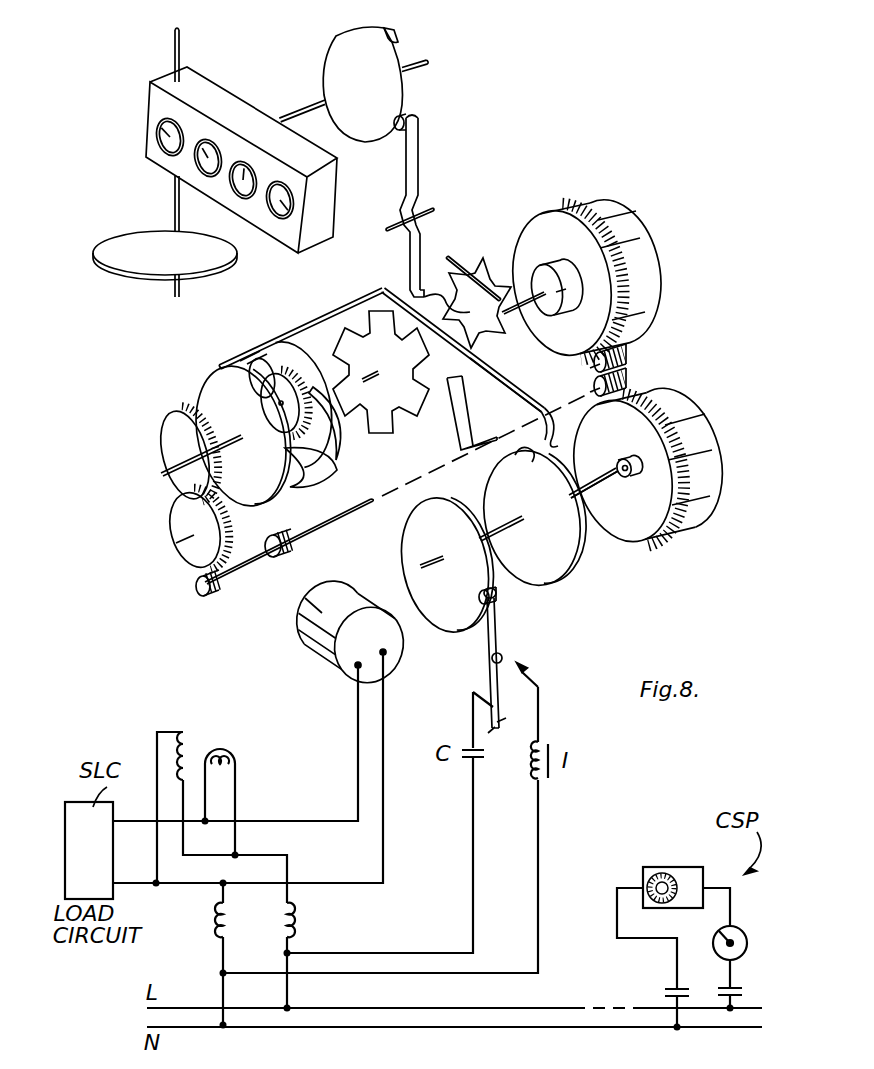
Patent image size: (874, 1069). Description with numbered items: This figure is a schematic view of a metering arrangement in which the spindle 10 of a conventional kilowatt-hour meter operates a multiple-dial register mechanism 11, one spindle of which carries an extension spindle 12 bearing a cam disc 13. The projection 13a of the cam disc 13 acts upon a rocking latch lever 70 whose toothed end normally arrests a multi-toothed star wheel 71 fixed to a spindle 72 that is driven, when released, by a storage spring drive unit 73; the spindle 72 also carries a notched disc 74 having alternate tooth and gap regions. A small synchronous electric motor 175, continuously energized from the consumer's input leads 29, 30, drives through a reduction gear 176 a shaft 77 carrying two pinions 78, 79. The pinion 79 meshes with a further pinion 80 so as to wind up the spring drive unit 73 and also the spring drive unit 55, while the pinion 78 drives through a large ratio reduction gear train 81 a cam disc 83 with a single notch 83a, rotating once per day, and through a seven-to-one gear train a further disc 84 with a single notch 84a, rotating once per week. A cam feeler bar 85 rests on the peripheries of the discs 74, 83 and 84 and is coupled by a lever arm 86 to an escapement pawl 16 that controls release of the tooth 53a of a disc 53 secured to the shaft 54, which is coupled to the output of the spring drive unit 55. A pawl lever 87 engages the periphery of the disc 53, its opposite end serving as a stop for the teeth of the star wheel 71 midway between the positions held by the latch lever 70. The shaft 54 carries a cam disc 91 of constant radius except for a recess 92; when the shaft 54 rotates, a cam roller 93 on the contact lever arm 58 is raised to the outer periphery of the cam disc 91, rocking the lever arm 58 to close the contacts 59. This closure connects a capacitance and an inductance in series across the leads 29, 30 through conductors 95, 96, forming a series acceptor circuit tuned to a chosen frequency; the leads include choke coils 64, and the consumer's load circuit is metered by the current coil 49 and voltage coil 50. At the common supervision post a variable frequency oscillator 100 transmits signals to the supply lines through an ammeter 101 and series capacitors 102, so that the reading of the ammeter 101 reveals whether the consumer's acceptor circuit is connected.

The spindle 10 is at (173, 206).
The register mechanism 11 is at (248, 112).
The extension spindle 12 is at (308, 108).
The cam disc 13 is at (340, 43).
The projection 13a is at (400, 33).
The rocking latch lever 70 is at (418, 160).
The star wheel 71 is at (462, 270).
The spindle 72 is at (473, 282).
The storage spring drive unit 73 is at (644, 240).
The pinion 80 is at (628, 357).
The pinion 79 is at (630, 382).
The storage spring drive unit 55 is at (690, 413).
The shaft 54 is at (614, 481).
The disc 53 is at (563, 558).
The tooth 53a is at (528, 462).
The escapement pawl 16 is at (561, 427).
The lever arm 86 is at (518, 393).
The pawl lever 87 is at (462, 417).
The cam feeler bar 85 is at (322, 318).
The notched disc 74 is at (381, 385).
The notch 84a is at (336, 435).
The notch 83a is at (335, 466).
The disc 84 is at (318, 470).
The cam disc 83 is at (258, 490).
The reduction gear train 81 is at (160, 446).
The pinion 78 is at (195, 585).
The shaft 77 is at (330, 523).
The reduction gear 176 is at (272, 566).
The synchronous electric motor 175 is at (318, 650).
The cam disc 91 is at (410, 531).
The cam roller 93 is at (482, 593).
The recess 92 is at (495, 580).
The contact lever arm 58 is at (488, 675).
The contacts 59 is at (508, 658).
The voltage coil 50 is at (187, 740).
The current coil 49 is at (225, 742).
The choke coils 64 is at (281, 920).
The mains lead 30 is at (221, 957).
The mains lead 29 is at (290, 987).
The conductor 96 is at (473, 872).
The conductor 95 is at (539, 862).
The variable frequency oscillator 100 is at (661, 867).
The ammeter 101 is at (744, 938).
The series capacitors 102 is at (720, 985).